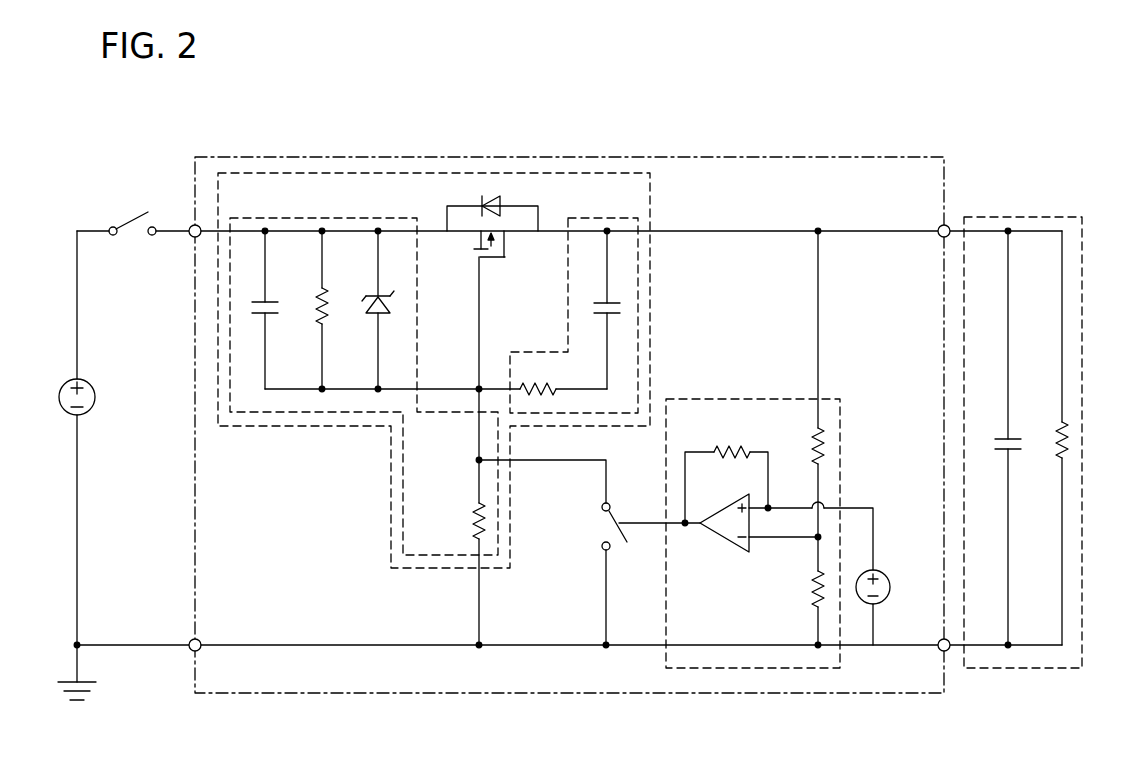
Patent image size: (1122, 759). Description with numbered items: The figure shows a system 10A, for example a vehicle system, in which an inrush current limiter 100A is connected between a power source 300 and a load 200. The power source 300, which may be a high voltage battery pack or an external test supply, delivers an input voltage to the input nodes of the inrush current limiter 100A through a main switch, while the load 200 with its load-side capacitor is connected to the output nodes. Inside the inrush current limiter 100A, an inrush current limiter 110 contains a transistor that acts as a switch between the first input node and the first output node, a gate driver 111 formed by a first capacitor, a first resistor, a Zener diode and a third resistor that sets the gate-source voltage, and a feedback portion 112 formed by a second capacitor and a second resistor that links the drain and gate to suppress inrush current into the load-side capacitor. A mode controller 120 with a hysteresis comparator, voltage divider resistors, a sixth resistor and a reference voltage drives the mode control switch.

The system 10A is at (614, 101).
The inrush current limiter 100A is at (808, 157).
The inrush current limiter 110 is at (260, 426).
The gate driver 111 is at (333, 412).
The feedback portion 112 is at (638, 282).
The mode controller 120 is at (755, 668).
The load 200 is at (1032, 668).
The power source 300 is at (94, 384).